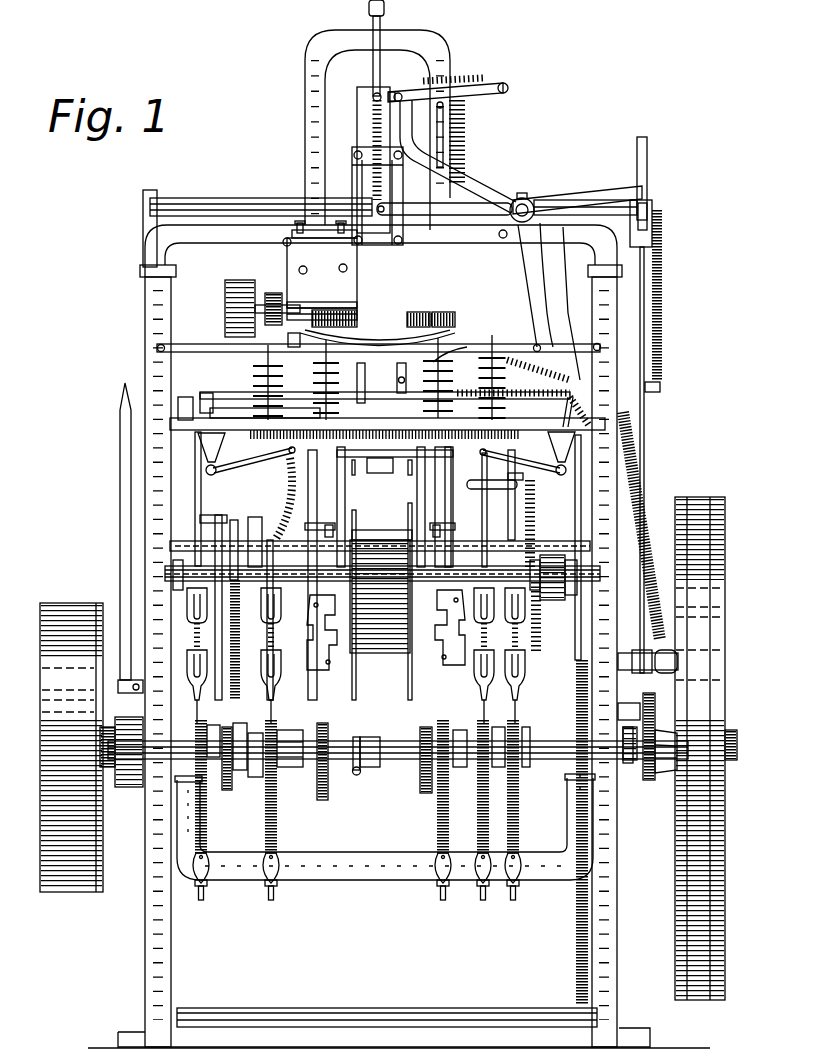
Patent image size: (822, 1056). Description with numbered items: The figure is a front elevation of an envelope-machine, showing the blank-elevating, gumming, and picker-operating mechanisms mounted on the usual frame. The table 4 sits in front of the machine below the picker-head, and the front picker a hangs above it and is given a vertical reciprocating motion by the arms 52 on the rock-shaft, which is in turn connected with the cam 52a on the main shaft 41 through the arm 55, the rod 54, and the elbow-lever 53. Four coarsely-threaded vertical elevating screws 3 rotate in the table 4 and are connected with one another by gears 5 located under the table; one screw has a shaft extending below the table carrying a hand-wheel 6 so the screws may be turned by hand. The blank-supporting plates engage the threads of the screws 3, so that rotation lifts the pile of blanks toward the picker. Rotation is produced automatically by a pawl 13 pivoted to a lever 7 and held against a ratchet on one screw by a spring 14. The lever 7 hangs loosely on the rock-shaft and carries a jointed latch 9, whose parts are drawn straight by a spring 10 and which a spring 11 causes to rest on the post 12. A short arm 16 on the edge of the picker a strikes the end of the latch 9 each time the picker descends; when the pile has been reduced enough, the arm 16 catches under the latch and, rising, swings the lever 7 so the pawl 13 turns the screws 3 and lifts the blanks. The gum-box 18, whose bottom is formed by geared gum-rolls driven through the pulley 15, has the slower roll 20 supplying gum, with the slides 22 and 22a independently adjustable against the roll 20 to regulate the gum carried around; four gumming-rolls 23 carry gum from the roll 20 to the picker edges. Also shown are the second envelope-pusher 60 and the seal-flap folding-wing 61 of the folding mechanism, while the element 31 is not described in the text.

The plunger rod 31 is at (381, 12).
The front picker a is at (364, 113).
The jointed latch 9 is at (470, 95).
The spring 10 is at (453, 70).
The short arm 16 is at (399, 92).
The lever 7 is at (490, 240).
The post 12 is at (437, 119).
The spring 11 is at (460, 140).
The arms 52 is at (508, 210).
The arm 55 is at (582, 192).
The rod 54 is at (646, 445).
The slide 22 is at (296, 237).
The slide 22a is at (337, 235).
The gum-box 18 is at (304, 255).
The pulley 15 is at (240, 308).
The gum-roll 20 is at (312, 306).
The gumming-rolls 23 is at (462, 318).
The pawl 13 is at (519, 351).
The vertical elevating screws 3 is at (374, 377).
The second envelope-pusher 60 is at (382, 375).
The seal-flap folding-wing 61 is at (397, 385).
The spring 14 is at (533, 372).
The table 4 is at (387, 426).
The gears 5 is at (386, 453).
The hand-wheel 6 is at (501, 551).
The main shaft 41 is at (398, 743).
The elbow-lever 53 is at (663, 683).
The cam 52a is at (647, 710).